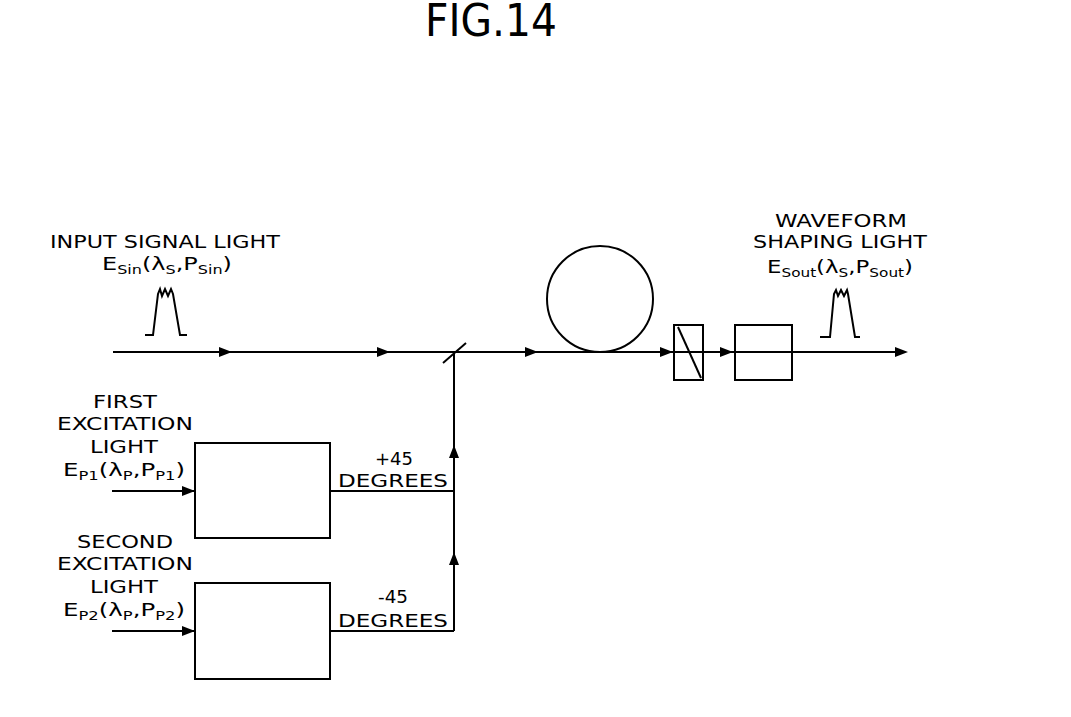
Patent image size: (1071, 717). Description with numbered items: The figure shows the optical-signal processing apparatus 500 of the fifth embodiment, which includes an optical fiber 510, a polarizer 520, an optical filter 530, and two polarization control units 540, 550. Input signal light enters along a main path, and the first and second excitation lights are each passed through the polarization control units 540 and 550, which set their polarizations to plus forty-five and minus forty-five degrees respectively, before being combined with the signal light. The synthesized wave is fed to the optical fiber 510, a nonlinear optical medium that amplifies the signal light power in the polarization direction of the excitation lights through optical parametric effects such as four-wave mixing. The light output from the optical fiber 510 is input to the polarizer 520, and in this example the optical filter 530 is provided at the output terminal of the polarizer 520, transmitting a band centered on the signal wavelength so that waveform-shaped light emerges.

The optical-signal processing apparatus 500 is at (767, 180).
The optical fiber 510 is at (600, 246).
The polarizer 520 is at (684, 380).
The optical filter 530 is at (763, 380).
The polarization control unit 540 is at (300, 443).
The polarization control unit 550 is at (300, 583).